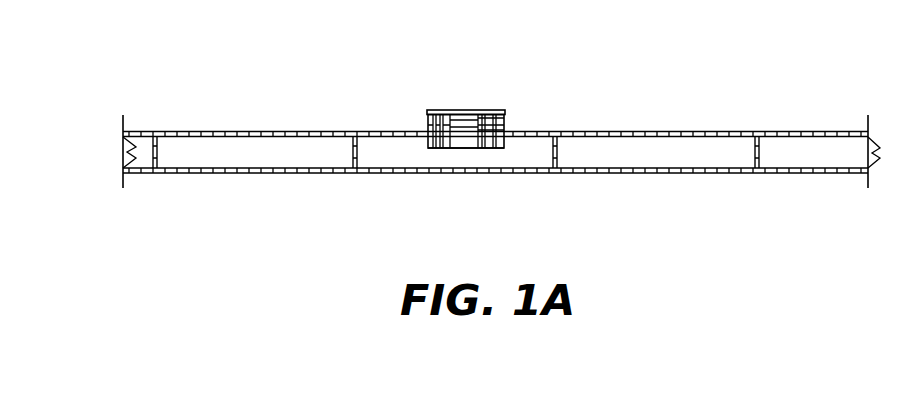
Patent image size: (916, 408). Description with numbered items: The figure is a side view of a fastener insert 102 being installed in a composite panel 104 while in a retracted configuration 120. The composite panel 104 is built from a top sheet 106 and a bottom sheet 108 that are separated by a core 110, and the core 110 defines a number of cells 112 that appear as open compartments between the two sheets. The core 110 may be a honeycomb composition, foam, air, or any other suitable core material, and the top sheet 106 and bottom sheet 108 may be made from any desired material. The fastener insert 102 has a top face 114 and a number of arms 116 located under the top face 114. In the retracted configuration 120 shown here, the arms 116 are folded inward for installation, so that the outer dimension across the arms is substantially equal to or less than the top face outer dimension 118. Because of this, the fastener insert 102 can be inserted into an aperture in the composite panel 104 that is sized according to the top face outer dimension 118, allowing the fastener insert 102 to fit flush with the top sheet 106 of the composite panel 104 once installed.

The fastener insert 102 is at (428, 134).
The composite panel 104 is at (176, 117).
The top sheet 106 is at (232, 131).
The bottom sheet 108 is at (223, 175).
The core 110 is at (757, 173).
The cells 112 is at (272, 161).
The top face 114 is at (452, 120).
The arms 116 is at (487, 131).
The top face outer dimension 118 is at (505, 67).
The retracted configuration 120 is at (503, 153).